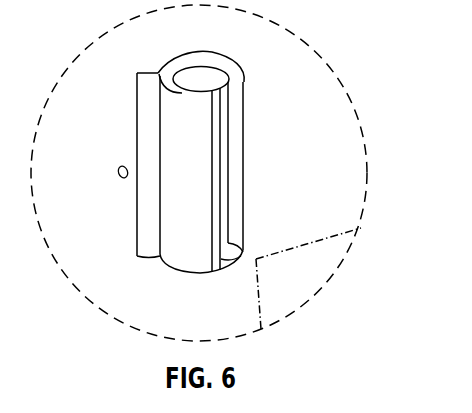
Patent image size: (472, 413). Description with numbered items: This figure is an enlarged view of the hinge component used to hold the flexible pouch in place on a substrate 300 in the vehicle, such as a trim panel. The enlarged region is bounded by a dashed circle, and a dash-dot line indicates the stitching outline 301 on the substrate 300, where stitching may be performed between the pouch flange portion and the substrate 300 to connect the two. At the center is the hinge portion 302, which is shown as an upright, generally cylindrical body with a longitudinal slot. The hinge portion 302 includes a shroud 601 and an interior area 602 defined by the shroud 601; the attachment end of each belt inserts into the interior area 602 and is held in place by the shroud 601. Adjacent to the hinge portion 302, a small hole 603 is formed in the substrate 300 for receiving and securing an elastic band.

The substrate 300 is at (186, 160).
The stitching outline 301 is at (257, 296).
The hinge portion 302 is at (250, 170).
The shroud 601 is at (182, 93).
The interior area 602 is at (202, 71).
The hole 603 is at (115, 185).